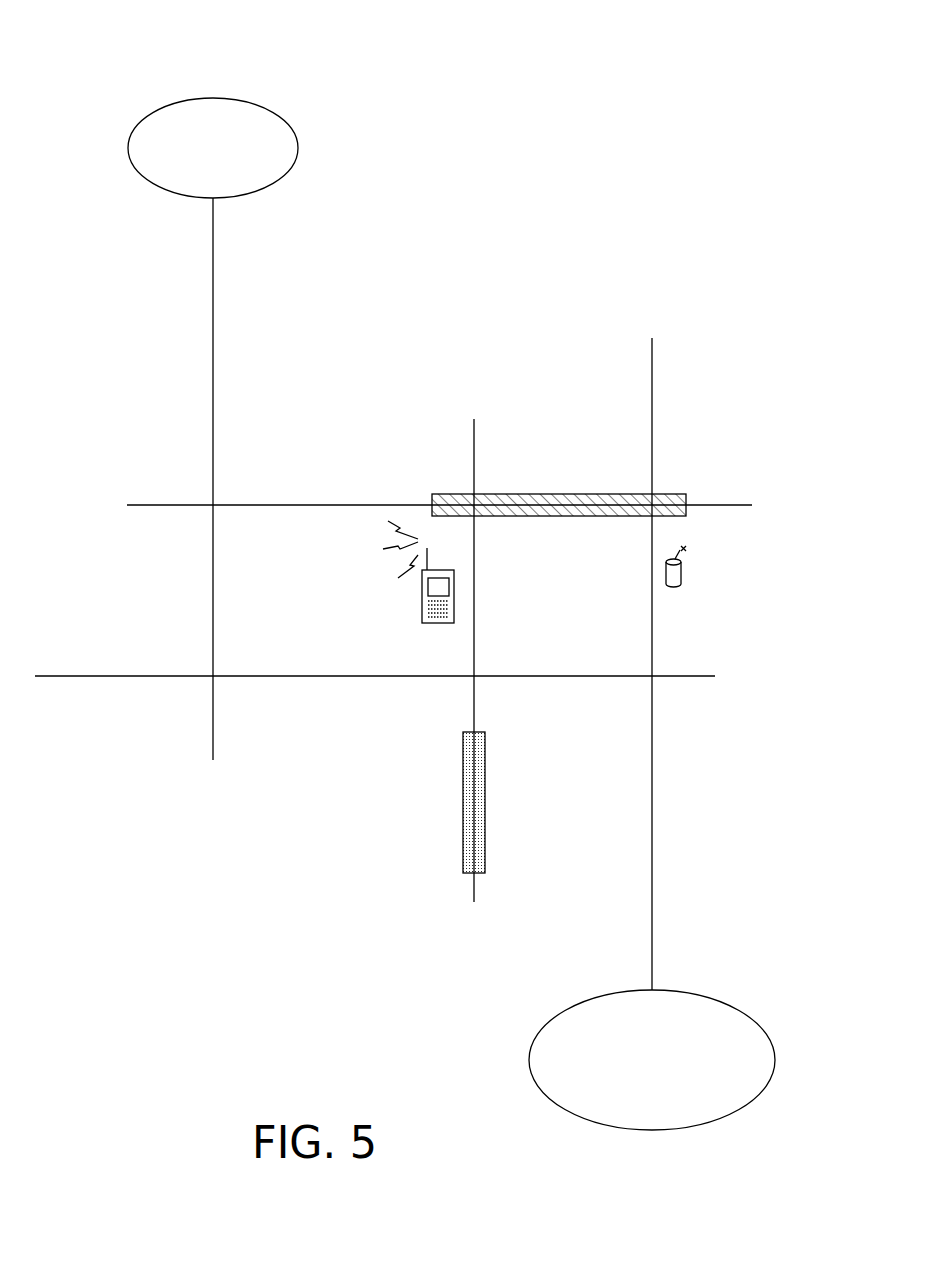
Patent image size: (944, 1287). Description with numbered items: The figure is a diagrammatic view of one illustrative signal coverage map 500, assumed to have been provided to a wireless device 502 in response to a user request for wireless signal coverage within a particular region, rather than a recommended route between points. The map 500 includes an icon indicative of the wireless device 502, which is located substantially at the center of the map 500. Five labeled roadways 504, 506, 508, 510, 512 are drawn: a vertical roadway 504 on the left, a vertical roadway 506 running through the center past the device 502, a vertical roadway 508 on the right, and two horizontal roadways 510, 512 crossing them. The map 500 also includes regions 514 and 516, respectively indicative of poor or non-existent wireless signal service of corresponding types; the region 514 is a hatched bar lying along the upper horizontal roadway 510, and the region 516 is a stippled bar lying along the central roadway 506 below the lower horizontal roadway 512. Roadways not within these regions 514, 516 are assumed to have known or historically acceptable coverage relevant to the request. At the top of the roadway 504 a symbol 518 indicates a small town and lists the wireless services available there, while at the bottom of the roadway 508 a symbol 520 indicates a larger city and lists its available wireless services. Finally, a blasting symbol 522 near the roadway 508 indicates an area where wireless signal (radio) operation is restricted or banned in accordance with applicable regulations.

The signal coverage map 500 is at (497, 40).
The wireless device 502 is at (422, 600).
The labeled roadway 504 is at (213, 268).
The labeled roadway 506 is at (474, 438).
The labeled roadway 508 is at (652, 368).
The labeled roadway 510 is at (730, 505).
The labeled roadway 512 is at (700, 675).
The region of poor wireless signal service 514 is at (553, 516).
The region of poor wireless signal service 516 is at (487, 827).
The small town symbol 518 is at (298, 150).
The larger city symbol 520 is at (775, 1062).
The blasting symbol 522 is at (681, 572).